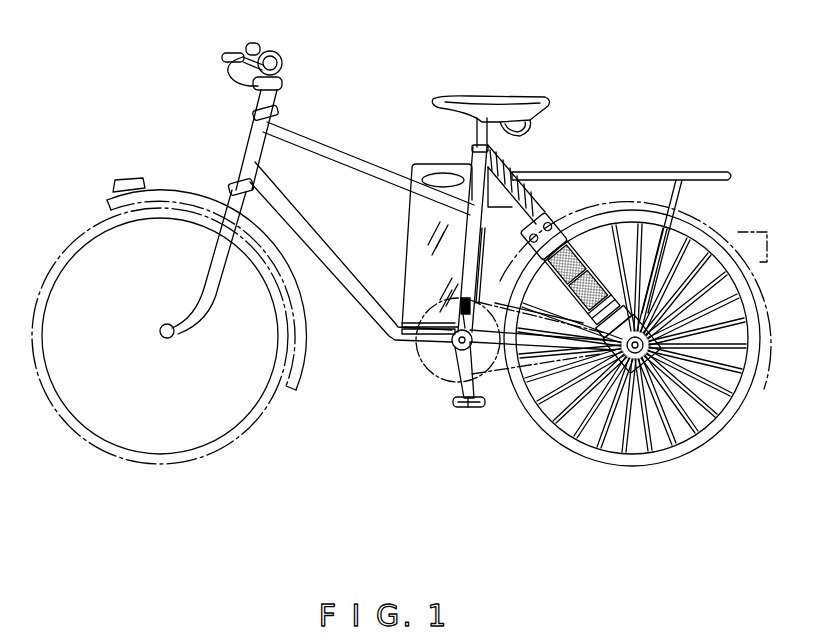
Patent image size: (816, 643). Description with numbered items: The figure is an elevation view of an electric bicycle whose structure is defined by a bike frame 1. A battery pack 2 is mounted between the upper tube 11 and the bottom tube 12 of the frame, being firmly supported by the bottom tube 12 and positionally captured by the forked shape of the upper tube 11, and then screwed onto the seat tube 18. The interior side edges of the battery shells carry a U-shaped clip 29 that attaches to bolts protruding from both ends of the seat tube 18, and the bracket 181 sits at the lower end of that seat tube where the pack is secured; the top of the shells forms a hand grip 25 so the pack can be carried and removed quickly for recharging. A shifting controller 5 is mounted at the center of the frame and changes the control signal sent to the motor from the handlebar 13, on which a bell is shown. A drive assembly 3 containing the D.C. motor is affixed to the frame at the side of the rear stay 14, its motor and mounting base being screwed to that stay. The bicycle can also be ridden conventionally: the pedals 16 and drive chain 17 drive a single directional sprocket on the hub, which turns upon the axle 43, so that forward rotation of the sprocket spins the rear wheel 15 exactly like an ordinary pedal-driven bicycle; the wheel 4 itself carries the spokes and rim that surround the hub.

The bike frame 1 is at (482, 88).
The battery pack 2 is at (416, 226).
The drive assembly 3 is at (602, 282).
The rear wheel 4 is at (704, 293).
The shifting controller 5 is at (498, 200).
The upper tube 11 is at (377, 174).
The bottom tube 12 is at (373, 309).
The handlebar 13 is at (272, 52).
The rear stay 14 is at (535, 228).
The rear wheel 15 is at (610, 340).
The pedals 16 is at (457, 388).
The drive chain 17 is at (510, 373).
The seat tube 18 is at (484, 247).
The rod bracket 181 is at (440, 353).
The hand grip 25 is at (440, 172).
The U-shaped clip 29 is at (452, 333).
The axle 43 is at (628, 385).